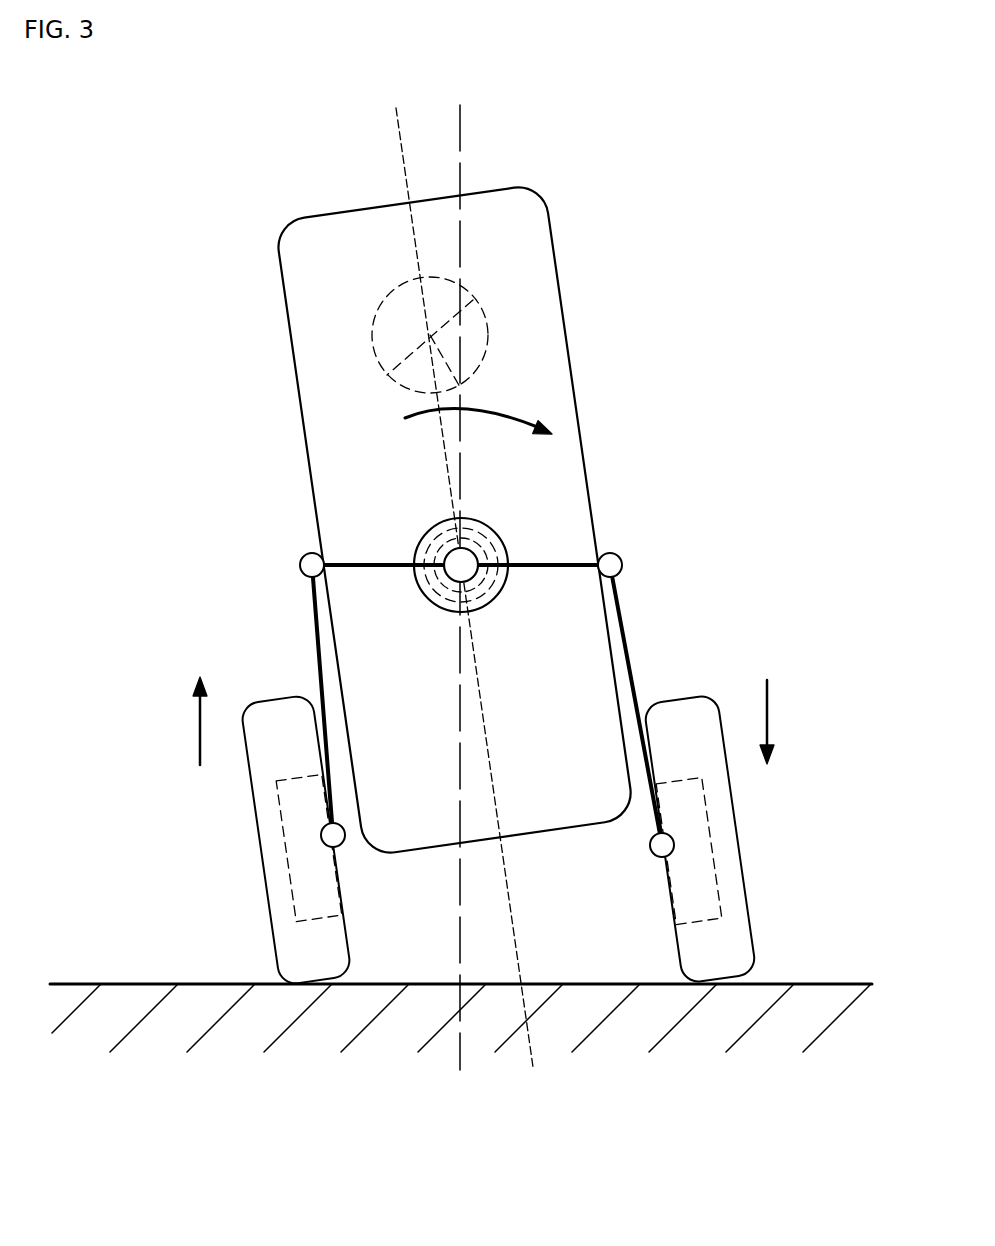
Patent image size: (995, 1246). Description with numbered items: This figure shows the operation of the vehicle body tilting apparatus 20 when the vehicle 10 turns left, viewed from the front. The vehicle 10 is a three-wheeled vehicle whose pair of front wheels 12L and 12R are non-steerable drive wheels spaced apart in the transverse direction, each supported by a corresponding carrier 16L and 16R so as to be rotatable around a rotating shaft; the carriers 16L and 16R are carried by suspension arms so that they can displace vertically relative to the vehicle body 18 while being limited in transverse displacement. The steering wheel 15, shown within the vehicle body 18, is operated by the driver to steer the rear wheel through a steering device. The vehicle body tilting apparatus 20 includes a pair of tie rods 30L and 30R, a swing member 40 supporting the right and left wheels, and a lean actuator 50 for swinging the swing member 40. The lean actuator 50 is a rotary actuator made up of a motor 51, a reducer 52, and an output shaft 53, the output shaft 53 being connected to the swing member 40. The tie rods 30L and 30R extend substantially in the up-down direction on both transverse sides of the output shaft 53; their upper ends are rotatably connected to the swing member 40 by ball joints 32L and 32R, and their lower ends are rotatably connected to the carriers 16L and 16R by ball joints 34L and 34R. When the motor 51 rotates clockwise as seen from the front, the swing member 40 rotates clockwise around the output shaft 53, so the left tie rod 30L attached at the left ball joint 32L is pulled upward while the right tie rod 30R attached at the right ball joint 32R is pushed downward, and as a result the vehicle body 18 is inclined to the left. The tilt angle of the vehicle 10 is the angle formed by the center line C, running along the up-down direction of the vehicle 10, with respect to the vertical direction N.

The vehicle 10 is at (262, 232).
The left front wheel 12L is at (272, 900).
The right front wheel 12R is at (720, 888).
The steering wheel 15 is at (480, 308).
The left carrier 16L is at (280, 808).
The right carrier 16R is at (706, 800).
The vehicle body 18 is at (570, 355).
The vehicle body tilting apparatus 20 is at (343, 545).
The left tie rod 30L is at (317, 632).
The right tie rod 30R is at (624, 630).
The left joint 32L is at (300, 565).
The right joint 32R is at (622, 566).
The left lower joint 34L is at (340, 846).
The right lower joint 34R is at (652, 853).
The swing member 40 is at (567, 552).
The lean actuator 50 is at (503, 585).
The motor 51 is at (436, 575).
The reducer 52 is at (486, 595).
The output shaft 53 is at (457, 548).
The center line C is at (401, 137).
The vertical direction N is at (462, 140).